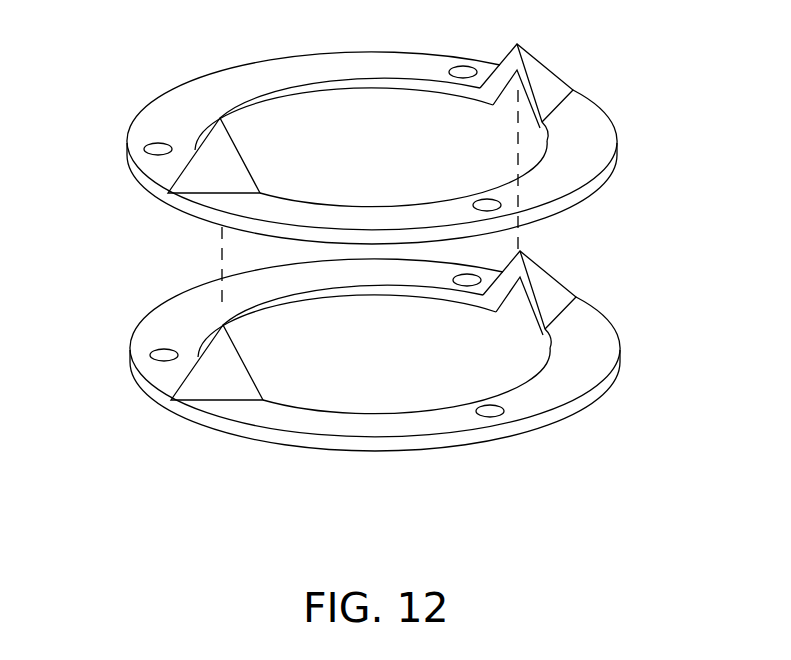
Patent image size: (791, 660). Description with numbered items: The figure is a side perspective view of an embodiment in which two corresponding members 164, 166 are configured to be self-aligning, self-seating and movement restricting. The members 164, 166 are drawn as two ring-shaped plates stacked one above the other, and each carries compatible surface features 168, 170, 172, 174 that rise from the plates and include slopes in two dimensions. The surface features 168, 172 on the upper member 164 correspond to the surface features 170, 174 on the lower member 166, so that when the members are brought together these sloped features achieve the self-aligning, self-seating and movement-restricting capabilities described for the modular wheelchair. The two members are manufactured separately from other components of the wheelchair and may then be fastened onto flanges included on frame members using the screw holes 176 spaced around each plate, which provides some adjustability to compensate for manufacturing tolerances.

The corresponding member 164 is at (170, 102).
The corresponding member 166 is at (157, 317).
The surface feature 168 is at (192, 175).
The surface feature 170 is at (210, 377).
The surface feature 172 is at (545, 82).
The surface feature 174 is at (560, 297).
The screw holes 176 is at (157, 148).